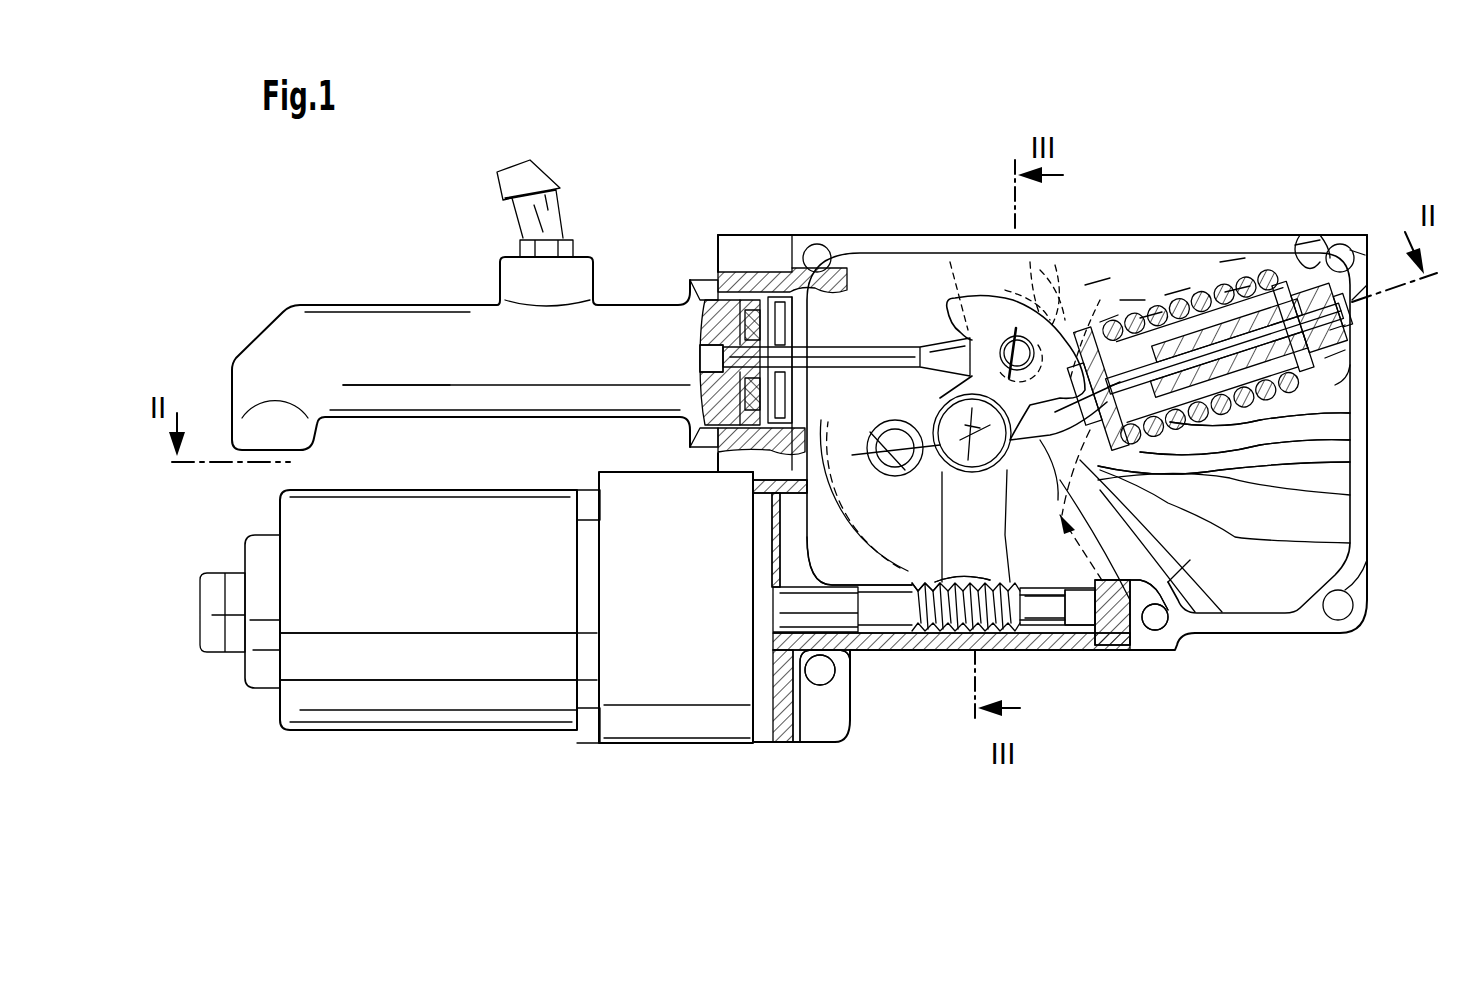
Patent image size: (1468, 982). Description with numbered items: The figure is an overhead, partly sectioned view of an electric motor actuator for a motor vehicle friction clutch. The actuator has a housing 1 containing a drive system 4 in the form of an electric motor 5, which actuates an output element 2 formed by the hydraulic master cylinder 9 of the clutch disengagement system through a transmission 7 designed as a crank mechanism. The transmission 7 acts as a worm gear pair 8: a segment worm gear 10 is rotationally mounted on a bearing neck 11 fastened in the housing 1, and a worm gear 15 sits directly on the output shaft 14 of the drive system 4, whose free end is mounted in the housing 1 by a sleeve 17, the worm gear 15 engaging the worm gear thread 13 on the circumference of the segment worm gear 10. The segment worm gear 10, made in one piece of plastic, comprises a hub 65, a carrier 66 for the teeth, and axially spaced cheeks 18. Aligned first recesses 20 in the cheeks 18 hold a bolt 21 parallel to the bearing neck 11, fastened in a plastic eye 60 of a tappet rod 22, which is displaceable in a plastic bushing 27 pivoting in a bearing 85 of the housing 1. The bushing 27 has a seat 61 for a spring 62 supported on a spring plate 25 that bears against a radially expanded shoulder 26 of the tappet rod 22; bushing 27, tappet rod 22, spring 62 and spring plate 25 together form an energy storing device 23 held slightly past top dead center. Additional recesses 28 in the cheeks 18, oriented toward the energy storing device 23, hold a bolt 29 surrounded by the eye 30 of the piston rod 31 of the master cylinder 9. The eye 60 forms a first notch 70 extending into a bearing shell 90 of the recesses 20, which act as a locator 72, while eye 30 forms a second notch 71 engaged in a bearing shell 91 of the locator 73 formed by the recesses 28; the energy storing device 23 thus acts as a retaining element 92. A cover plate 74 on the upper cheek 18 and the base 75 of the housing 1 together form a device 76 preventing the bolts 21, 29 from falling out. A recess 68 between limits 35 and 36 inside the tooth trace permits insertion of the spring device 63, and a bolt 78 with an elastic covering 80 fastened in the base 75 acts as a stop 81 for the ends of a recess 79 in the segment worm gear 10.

The housing 1 is at (858, 149).
The output element 2 is at (417, 298).
The drive system 4 is at (421, 745).
The electric motor 5 is at (290, 705).
The transmission 7 is at (1110, 590).
The worm gear pair 8 is at (1000, 597).
The hydraulic master cylinder 9 is at (366, 337).
The segment worm gear 10 is at (915, 556).
The bearing neck 11 is at (886, 360).
The worm gear thread 13 is at (893, 566).
The output shaft 14 is at (845, 625).
The worm gear 15 is at (1003, 627).
The sleeve 17 is at (1080, 595).
The cheeks 18 is at (1097, 280).
The first recesses 20 is at (1300, 545).
The bolt 21 is at (1300, 496).
The tappet rod 22 is at (1330, 373).
The energy storing device 23 is at (1230, 258).
The spring plate 25 is at (1290, 442).
The radially expanded shoulder 26 is at (1300, 417).
The plastic bushing 27 is at (1306, 242).
The additional recesses 28 is at (1048, 262).
The bolt 29 is at (1003, 300).
The eye 30 is at (938, 290).
The piston rod 31 is at (830, 340).
The limit 35 is at (1180, 540).
The limit 36 is at (1058, 595).
The eye 60 is at (1300, 461).
The seat 61 is at (1265, 262).
The spring 62 is at (1172, 290).
The spring device 63 is at (1152, 318).
The hub 65 is at (947, 480).
The carrier 66 is at (855, 473).
The recess 68 is at (1012, 512).
The first notch 70 is at (1155, 560).
The second notch 71 is at (1016, 328).
The locator 72 is at (1000, 470).
The locator 73 is at (998, 332).
The cover plate 74 is at (1132, 298).
The base 75 is at (1237, 290).
The device 76 is at (1106, 322).
The bolt 78 is at (858, 440).
The recess 79 is at (840, 380).
The elastic covering 80 is at (880, 425).
The stop 81 is at (900, 470).
The bearing 85 is at (1356, 250).
The bearing shell 90 is at (1175, 640).
The bearing shell 91 is at (1062, 300).
The retaining element 92 is at (1335, 335).